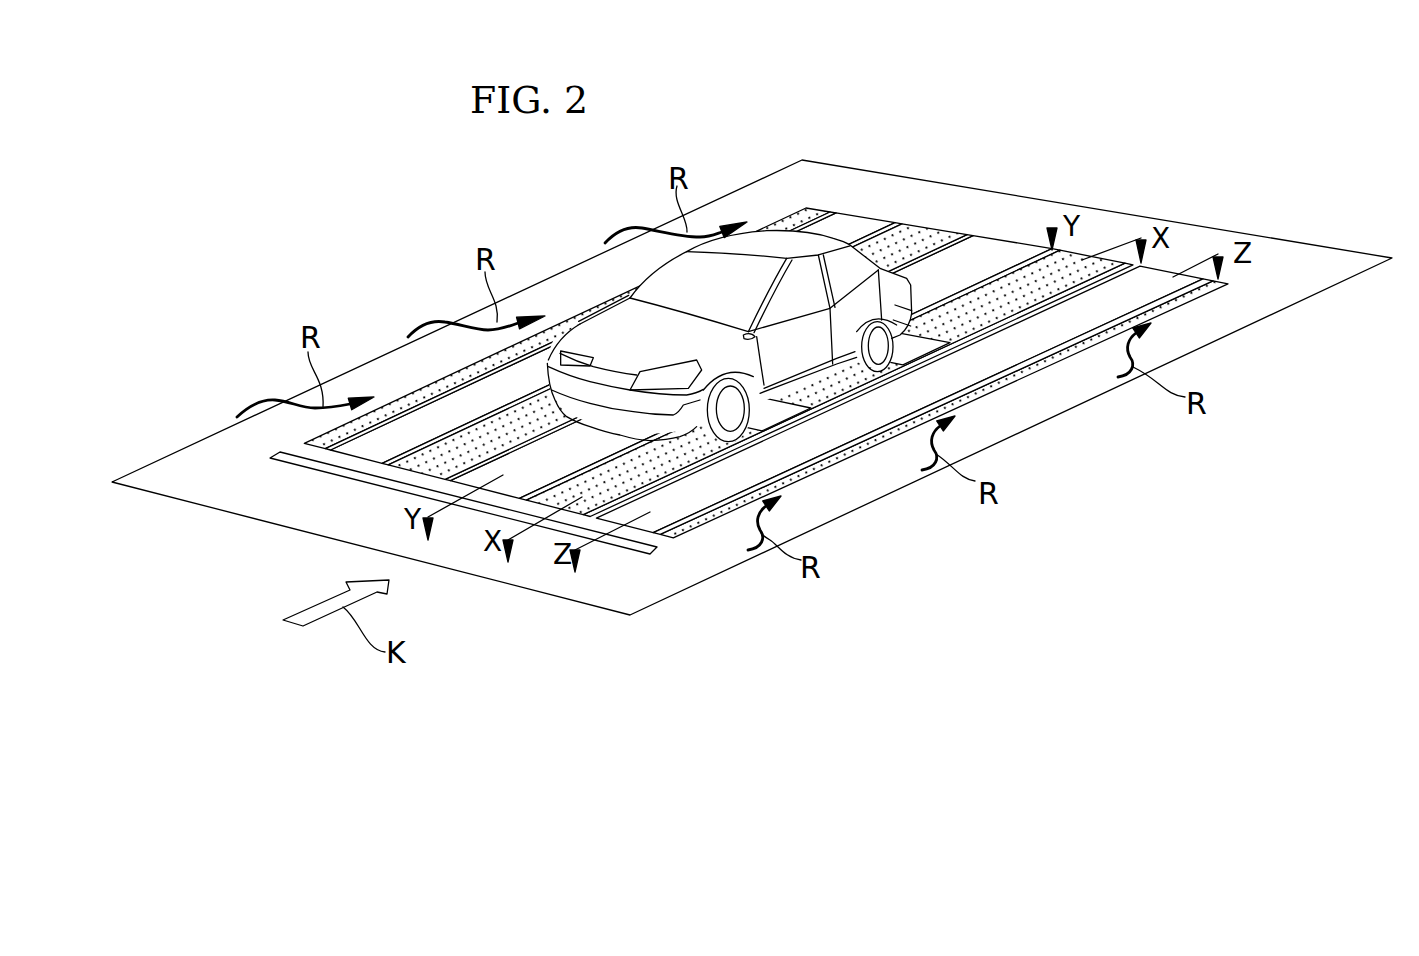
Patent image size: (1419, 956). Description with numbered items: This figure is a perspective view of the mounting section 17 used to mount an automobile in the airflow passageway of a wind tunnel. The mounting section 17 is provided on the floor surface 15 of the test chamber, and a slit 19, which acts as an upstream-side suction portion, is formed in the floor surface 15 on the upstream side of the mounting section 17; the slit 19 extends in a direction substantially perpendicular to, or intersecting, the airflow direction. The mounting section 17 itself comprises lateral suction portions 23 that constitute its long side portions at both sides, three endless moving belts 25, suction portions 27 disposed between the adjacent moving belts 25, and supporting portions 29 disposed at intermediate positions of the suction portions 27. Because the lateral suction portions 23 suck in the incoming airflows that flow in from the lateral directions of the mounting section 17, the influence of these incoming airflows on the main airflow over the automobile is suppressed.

The floor surface 15 is at (1185, 333).
The mounting section 17 is at (858, 457).
The slit 19 is at (281, 456).
The lateral suction portions 23 is at (804, 214).
The endless moving belts 25 is at (855, 220).
The suction portions 27 is at (922, 224).
The supporting portions 29 is at (777, 431).